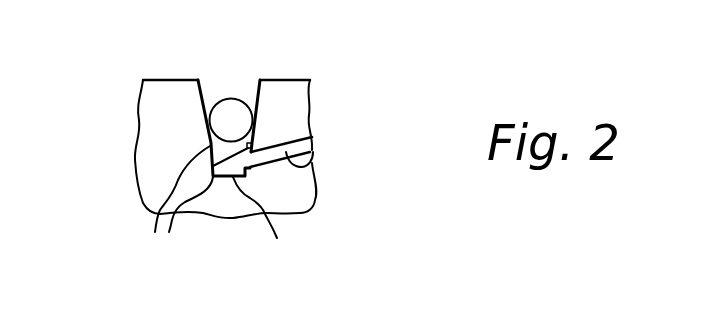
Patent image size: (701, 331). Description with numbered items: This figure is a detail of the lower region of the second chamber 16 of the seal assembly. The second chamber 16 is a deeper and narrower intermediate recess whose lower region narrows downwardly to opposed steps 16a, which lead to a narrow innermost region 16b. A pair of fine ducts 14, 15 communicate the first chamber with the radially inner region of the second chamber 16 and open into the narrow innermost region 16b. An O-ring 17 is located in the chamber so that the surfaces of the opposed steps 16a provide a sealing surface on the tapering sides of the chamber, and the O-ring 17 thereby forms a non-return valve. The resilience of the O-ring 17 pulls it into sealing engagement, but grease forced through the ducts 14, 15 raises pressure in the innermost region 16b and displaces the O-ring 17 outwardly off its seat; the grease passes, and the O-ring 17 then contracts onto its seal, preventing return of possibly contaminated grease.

The duct 14 is at (333, 157).
The duct 15 is at (313, 166).
The second chamber 16 is at (219, 145).
The opposed steps 16a is at (195, 169).
The narrow innermost region 16b is at (274, 174).
The O-ring 17 is at (235, 117).